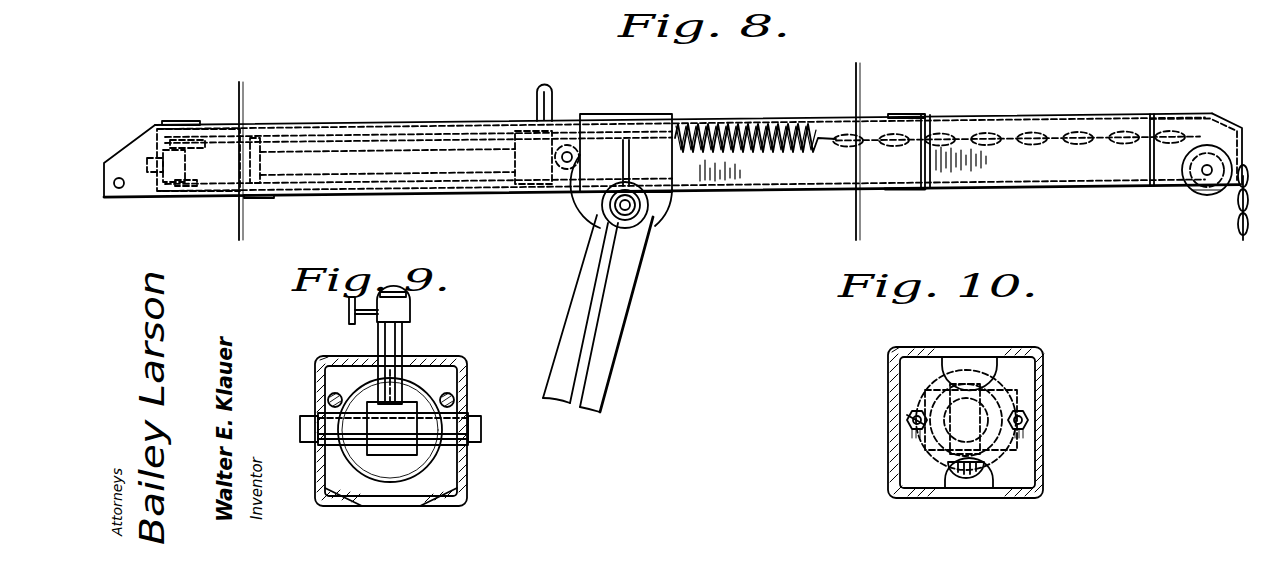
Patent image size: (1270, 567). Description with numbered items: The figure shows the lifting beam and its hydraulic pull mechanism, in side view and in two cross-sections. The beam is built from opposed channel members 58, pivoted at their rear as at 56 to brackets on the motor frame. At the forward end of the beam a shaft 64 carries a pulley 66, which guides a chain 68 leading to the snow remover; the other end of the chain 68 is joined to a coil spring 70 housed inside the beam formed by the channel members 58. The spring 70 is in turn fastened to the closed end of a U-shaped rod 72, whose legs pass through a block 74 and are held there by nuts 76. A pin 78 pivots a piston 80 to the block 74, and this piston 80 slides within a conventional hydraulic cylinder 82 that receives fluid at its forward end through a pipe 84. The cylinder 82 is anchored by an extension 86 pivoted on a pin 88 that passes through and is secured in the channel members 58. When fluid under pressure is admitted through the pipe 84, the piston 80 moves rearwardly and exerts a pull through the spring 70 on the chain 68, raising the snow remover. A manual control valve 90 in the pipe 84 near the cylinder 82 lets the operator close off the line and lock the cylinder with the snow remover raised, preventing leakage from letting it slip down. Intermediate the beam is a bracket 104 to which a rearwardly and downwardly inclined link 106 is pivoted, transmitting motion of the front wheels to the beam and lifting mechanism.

In FIG. 8, the pivot 56 is at (121, 188).
In FIG. 9, the pivot 56 is at (468, 390).
In FIG. 8, the channel members 58 is at (402, 168).
In FIG. 10, the channel members 58 is at (1047, 395).
In FIG. 8, the shaft 64 is at (552, 102).
In FIG. 8, the pulley 66 is at (568, 190).
In FIG. 8, the chain 68 is at (572, 152).
In FIG. 8, the coil spring 70 is at (762, 122).
In FIG. 8, the U-shaped rod 72 is at (320, 133).
In FIG. 9, the U-shaped rod 72 is at (450, 388).
In FIG. 10, the U-shaped rod 72 is at (1030, 421).
In FIG. 8, the block 74 is at (162, 196).
In FIG. 10, the block 74 is at (1020, 460).
In FIG. 8, the nuts 76 is at (152, 158).
In FIG. 10, the nuts 76 is at (905, 420).
In FIG. 8, the pin 78 is at (172, 150).
In FIG. 10, the pin 78 is at (966, 472).
In FIG. 8, the piston 80 is at (238, 98).
In FIG. 8, the hydraulic cylinder 82 is at (465, 152).
In FIG. 9, the pipe 84 is at (405, 333).
In FIG. 9, the extension 86 is at (405, 452).
In FIG. 9, the pin 88 is at (482, 434).
In FIG. 9, the manual control valve 90 is at (412, 302).
In FIG. 8, the bracket 104 is at (652, 209).
In FIG. 8, the link 106 is at (612, 312).